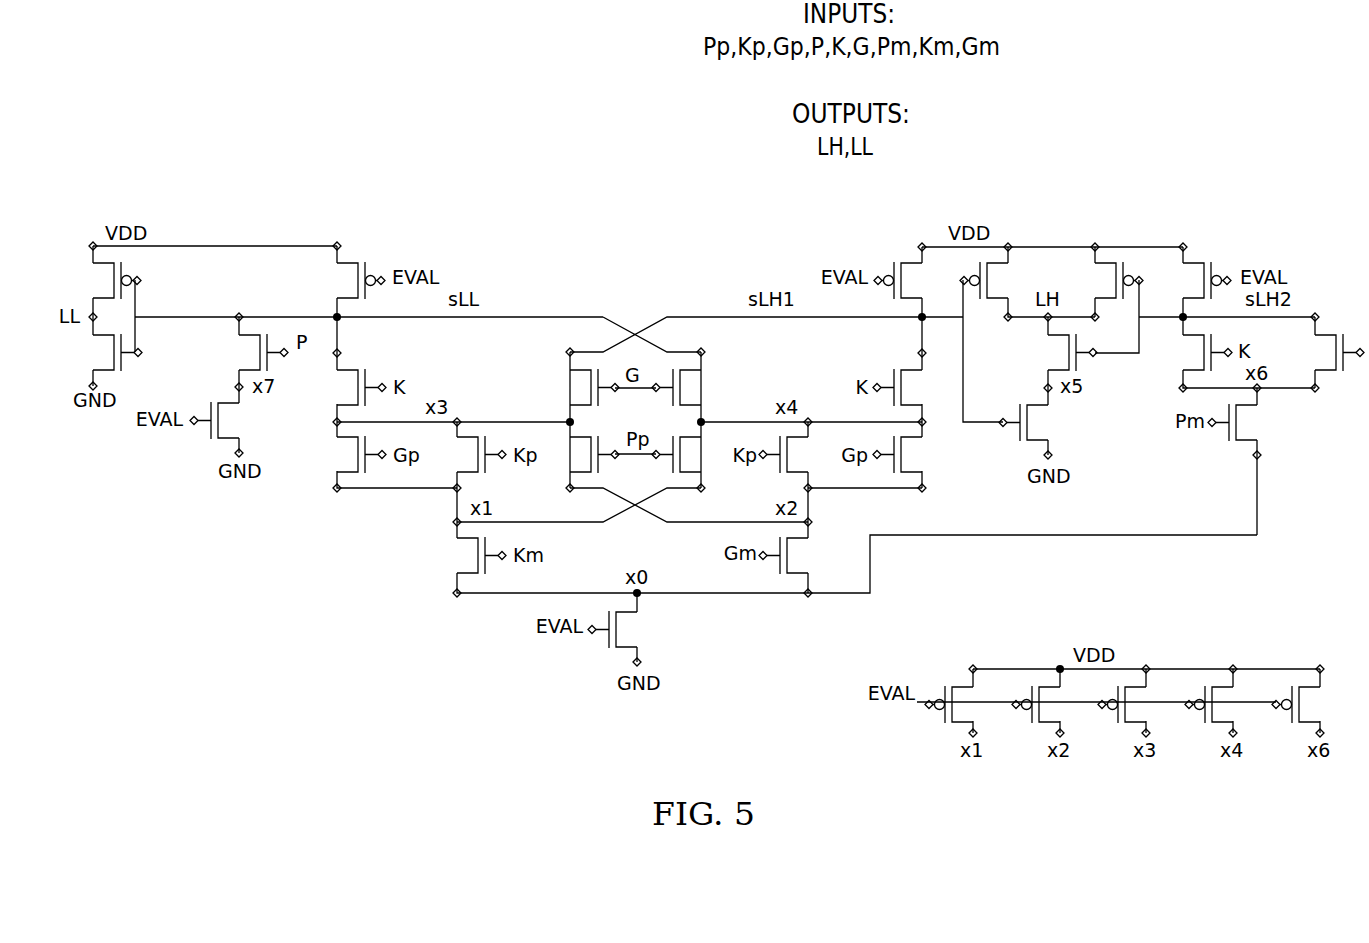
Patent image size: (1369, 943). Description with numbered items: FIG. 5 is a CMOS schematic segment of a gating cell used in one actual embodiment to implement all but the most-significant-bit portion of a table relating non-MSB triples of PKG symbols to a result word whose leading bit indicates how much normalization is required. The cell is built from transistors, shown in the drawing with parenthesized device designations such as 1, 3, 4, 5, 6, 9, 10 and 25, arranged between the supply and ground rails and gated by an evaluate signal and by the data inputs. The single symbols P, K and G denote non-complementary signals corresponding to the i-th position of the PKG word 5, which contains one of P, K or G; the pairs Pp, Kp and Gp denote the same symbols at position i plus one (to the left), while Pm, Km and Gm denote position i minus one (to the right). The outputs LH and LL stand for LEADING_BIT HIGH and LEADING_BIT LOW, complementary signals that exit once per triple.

The precharge PMOS transistor 1 is at (1140, 701).
The PMOS transistor 3 is at (655, 316).
The precharge transistor 4 is at (629, 280).
The PKG word 5 is at (1048, 387).
The NMOS transistor 6 is at (777, 387).
The NMOS pass transistor 9 is at (629, 471).
The PMOS transistor 10 is at (605, 280).
The evaluate transistor 25 is at (624, 629).